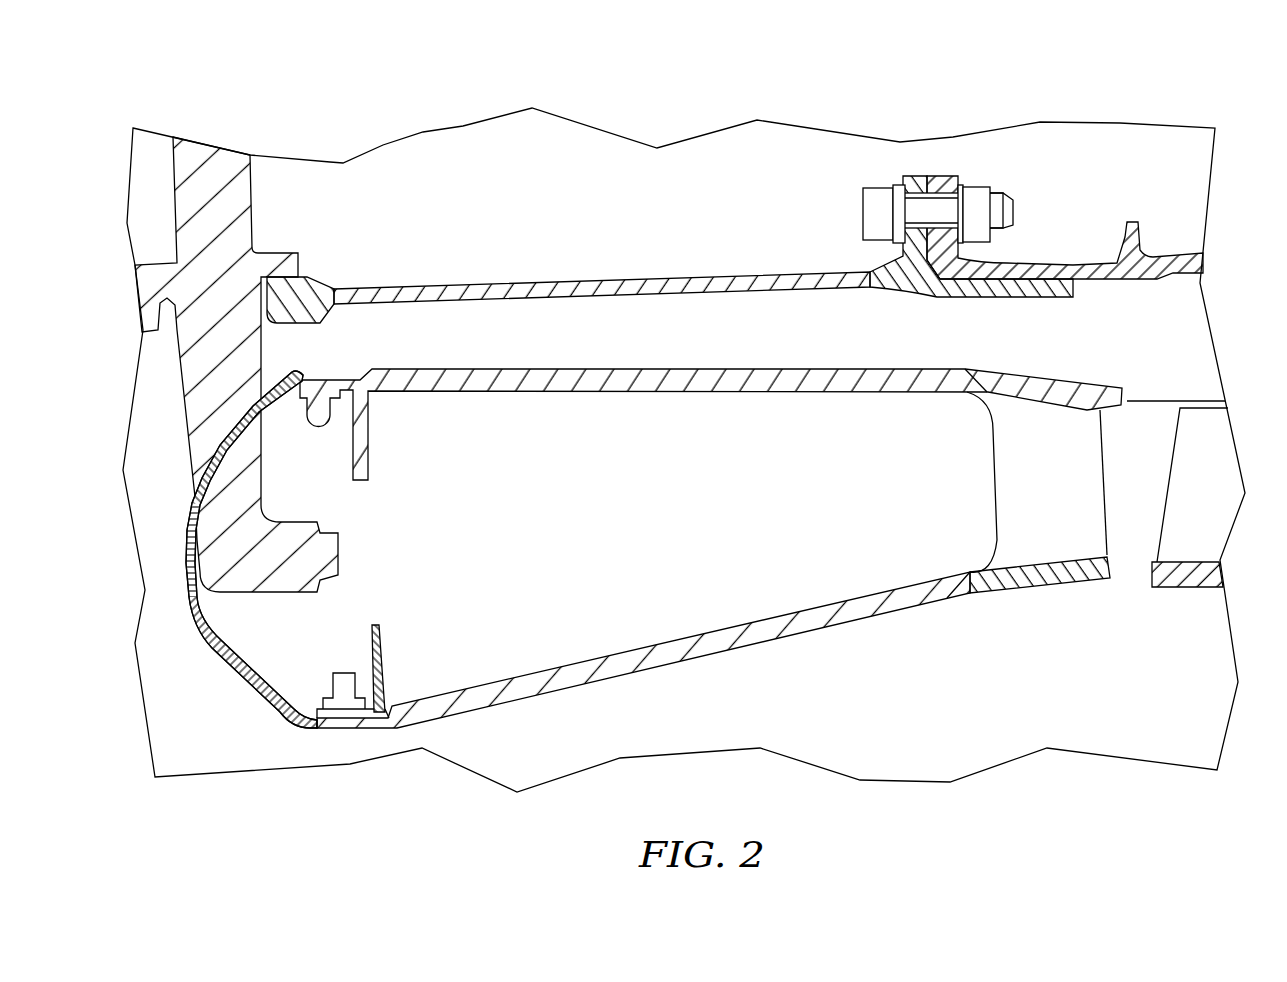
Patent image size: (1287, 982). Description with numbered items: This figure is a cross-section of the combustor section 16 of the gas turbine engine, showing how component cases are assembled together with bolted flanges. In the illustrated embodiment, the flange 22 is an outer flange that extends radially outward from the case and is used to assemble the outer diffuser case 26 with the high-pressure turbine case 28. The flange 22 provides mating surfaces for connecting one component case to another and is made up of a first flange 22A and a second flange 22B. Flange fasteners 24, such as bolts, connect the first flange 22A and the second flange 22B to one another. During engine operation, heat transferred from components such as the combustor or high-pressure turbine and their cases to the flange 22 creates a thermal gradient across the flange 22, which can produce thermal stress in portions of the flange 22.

The combustor section 16 is at (396, 183).
The flange 22 is at (927, 160).
The first flange 22A is at (950, 176).
The second flange 22B is at (917, 176).
The flange fasteners 24 is at (1013, 207).
The outer diffuser case 26 is at (597, 278).
The high-pressure turbine case 28 is at (1177, 251).